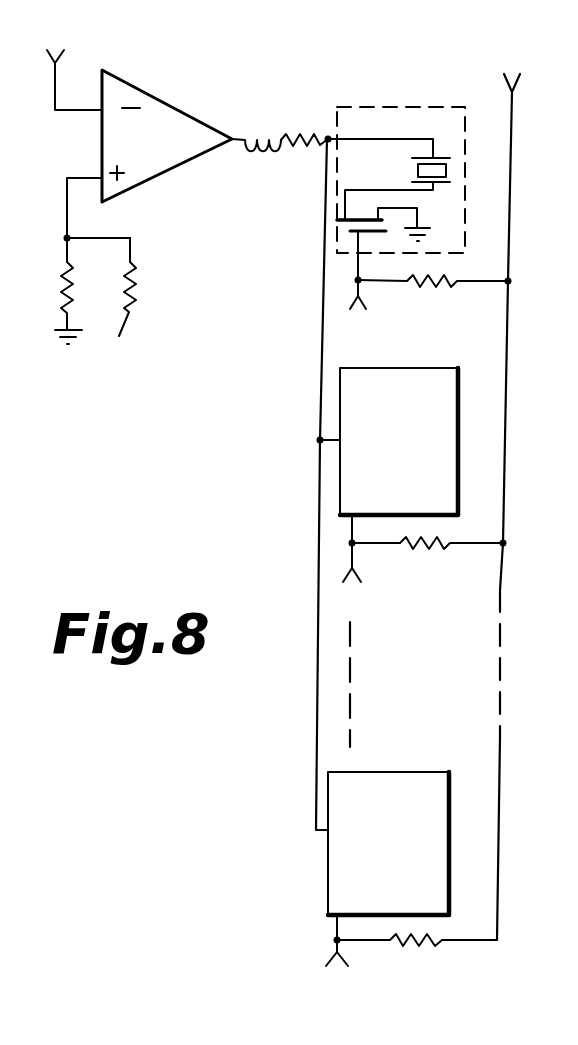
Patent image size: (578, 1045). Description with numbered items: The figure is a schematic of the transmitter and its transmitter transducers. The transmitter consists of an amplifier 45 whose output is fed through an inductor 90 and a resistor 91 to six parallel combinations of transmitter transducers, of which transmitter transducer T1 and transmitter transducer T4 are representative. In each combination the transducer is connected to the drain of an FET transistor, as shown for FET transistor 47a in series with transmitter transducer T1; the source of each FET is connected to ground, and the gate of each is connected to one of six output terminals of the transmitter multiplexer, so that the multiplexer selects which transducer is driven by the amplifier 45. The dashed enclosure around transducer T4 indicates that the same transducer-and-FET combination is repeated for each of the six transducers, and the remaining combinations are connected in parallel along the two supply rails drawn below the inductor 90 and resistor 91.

The amplifier 45 is at (170, 104).
The inductor 90 is at (267, 128).
The resistor 91 is at (303, 126).
The transmitter transducer T4 is at (395, 191).
The transmitter transducer T1 is at (413, 170).
The FET transistor 47a is at (395, 243).